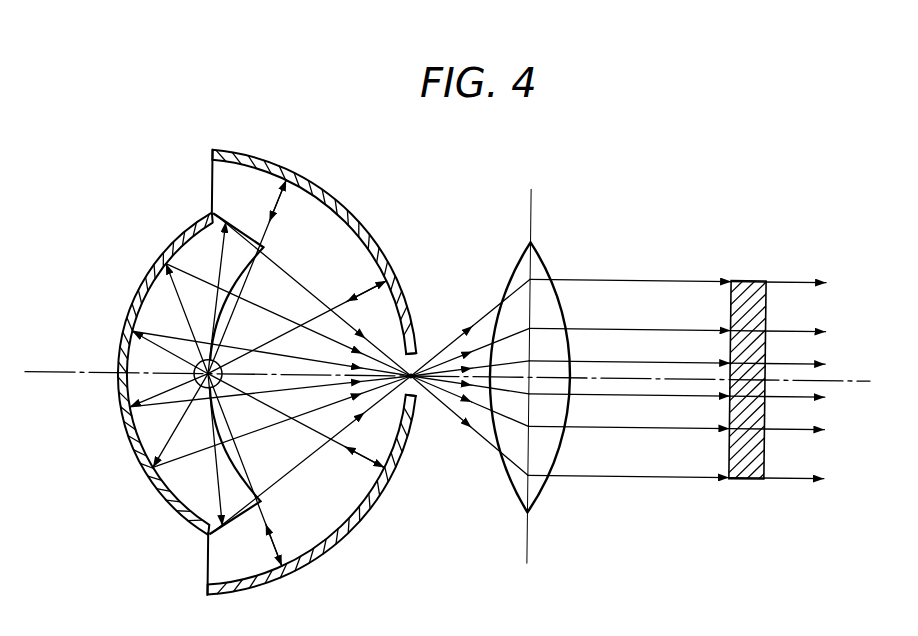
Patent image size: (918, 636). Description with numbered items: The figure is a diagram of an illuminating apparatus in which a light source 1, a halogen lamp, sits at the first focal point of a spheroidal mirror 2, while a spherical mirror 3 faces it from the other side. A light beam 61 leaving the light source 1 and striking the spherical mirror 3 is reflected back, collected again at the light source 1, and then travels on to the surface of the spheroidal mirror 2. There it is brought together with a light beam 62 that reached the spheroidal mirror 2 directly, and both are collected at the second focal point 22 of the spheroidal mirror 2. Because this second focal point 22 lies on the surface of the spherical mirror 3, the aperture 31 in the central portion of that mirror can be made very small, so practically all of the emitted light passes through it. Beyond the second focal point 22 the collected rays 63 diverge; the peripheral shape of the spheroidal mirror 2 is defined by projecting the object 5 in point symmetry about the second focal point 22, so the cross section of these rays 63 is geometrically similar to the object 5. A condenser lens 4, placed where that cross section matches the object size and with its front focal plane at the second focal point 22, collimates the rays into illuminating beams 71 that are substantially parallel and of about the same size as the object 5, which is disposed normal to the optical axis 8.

The light source 1 is at (194, 372).
The spheroidal mirror 2 is at (122, 419).
The spherical mirror 3 is at (360, 521).
The condenser lens 4 is at (536, 262).
The object to be illuminated 5 is at (751, 277).
The optical axis 8 is at (857, 377).
The second focal point 22 is at (417, 348).
The aperture 31 is at (413, 400).
The light beam 61 is at (284, 183).
The light beam 62 is at (166, 306).
The collected rays 63 is at (463, 440).
The illuminating beams 71 is at (644, 502).